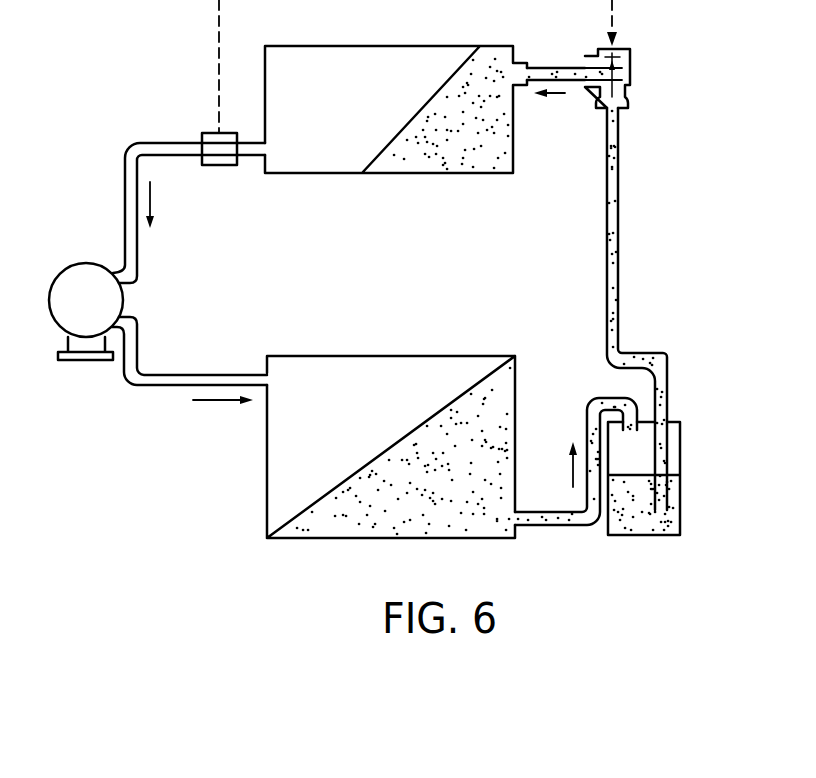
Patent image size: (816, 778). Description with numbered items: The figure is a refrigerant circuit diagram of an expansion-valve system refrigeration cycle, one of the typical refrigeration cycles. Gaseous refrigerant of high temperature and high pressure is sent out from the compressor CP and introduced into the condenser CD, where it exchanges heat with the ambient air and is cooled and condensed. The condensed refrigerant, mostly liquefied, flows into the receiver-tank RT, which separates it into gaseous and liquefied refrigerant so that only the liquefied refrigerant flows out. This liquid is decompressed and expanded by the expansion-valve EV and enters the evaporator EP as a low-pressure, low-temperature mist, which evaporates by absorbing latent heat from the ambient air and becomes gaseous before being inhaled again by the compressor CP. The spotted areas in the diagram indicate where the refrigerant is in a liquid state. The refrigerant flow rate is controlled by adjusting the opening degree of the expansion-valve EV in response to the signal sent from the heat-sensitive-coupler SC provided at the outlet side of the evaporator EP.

The compressor CP is at (58, 274).
The heat-sensitive-coupler SC is at (222, 166).
The evaporator EP is at (327, 163).
The expansion-valve EV is at (632, 68).
The receiver-tank RT is at (680, 455).
The condenser CD is at (267, 495).